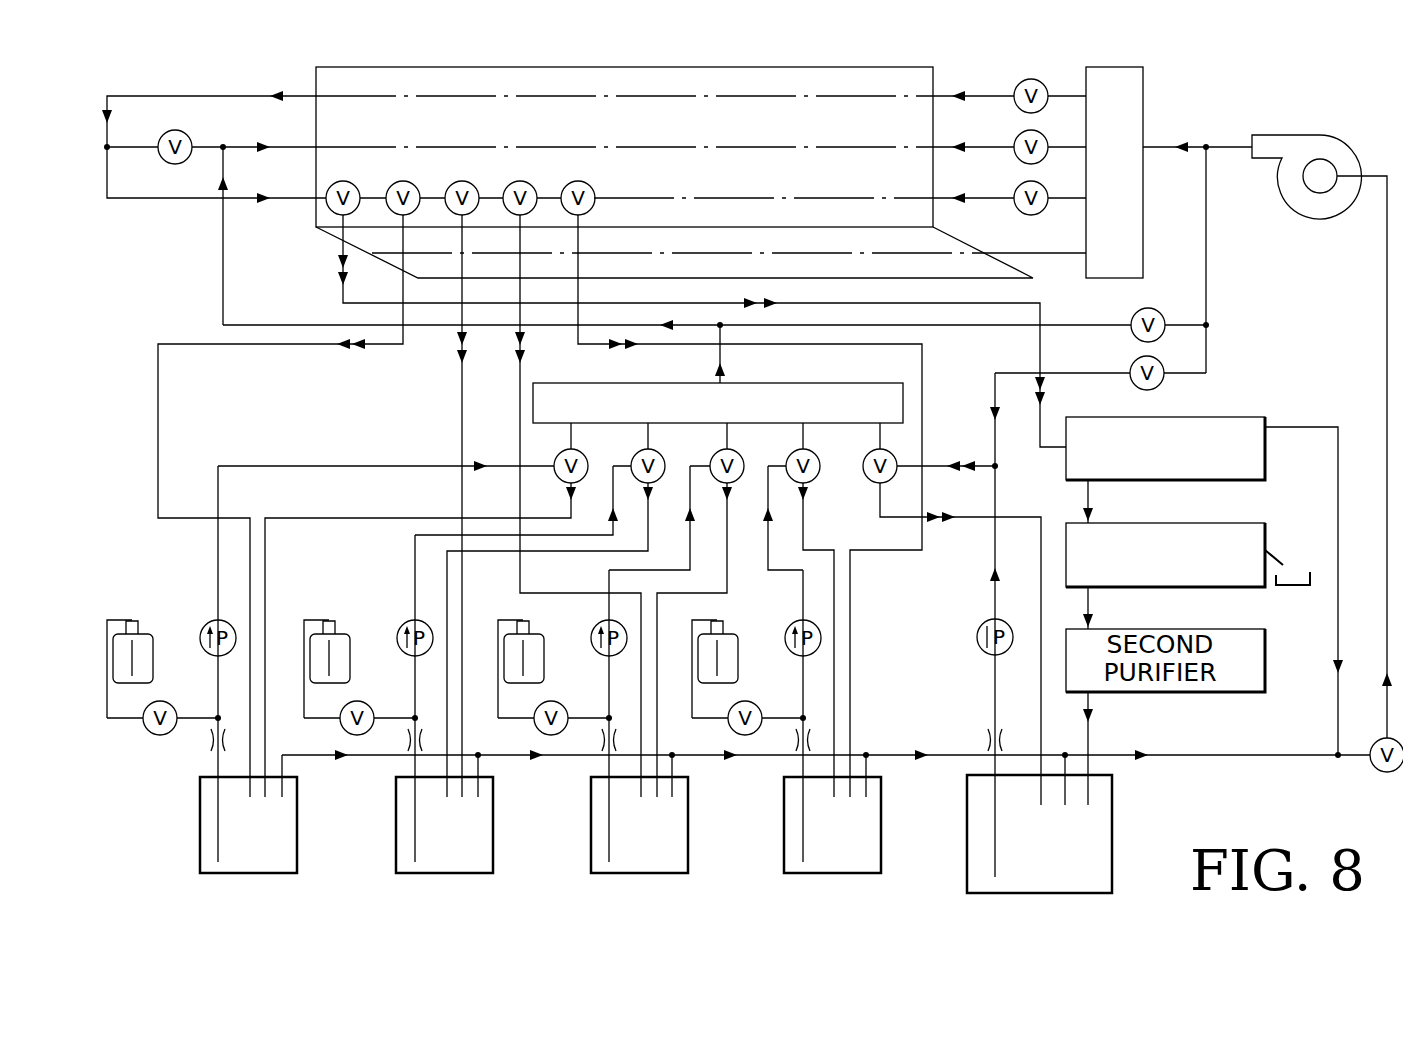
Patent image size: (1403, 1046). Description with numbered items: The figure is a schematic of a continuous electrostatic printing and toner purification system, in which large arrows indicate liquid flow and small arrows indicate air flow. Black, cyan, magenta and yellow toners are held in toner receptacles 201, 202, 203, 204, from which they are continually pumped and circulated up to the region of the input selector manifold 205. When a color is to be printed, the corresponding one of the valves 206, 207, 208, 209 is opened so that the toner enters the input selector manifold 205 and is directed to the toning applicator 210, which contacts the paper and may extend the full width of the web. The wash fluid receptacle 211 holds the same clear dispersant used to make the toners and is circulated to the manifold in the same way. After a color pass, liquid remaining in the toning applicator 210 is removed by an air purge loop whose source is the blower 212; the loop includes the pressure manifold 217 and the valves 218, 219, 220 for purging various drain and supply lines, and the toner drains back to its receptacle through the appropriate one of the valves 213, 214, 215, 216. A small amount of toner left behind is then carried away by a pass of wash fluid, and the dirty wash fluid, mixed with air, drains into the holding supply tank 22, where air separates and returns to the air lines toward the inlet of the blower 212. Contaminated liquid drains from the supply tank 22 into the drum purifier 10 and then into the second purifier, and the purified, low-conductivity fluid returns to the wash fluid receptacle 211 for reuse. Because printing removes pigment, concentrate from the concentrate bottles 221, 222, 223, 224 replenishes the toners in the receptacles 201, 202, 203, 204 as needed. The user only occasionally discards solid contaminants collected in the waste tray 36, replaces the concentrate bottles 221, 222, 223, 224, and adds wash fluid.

The toning applicator 210 is at (915, 67).
The pressure manifold 217 is at (1143, 95).
The blower 212 is at (1280, 135).
The valve 218 is at (1055, 68).
The valve 219 is at (1020, 135).
The valve 220 is at (1020, 185).
The valve 213 is at (390, 183).
The valve 214 is at (472, 183).
The valve 215 is at (507, 182).
The valve 216 is at (597, 168).
The input selector manifold 205 is at (820, 383).
The valve 206 is at (578, 454).
The valve 207 is at (656, 454).
The valve 208 is at (736, 454).
The valve 209 is at (811, 454).
The holding supply tank 22 is at (1240, 417).
The drum purifier 10 is at (1240, 523).
The waste tray 36 is at (1292, 590).
The toner receptacle 201 is at (297, 812).
The toner receptacle 202 is at (493, 812).
The toner receptacle 203 is at (688, 812).
The toner receptacle 204 is at (881, 812).
The wash fluid receptacle 211 is at (1112, 808).
The concentrate bottle 221 is at (153, 667).
The concentrate bottle 222 is at (350, 667).
The concentrate bottle 223 is at (544, 667).
The concentrate bottle 224 is at (738, 667).